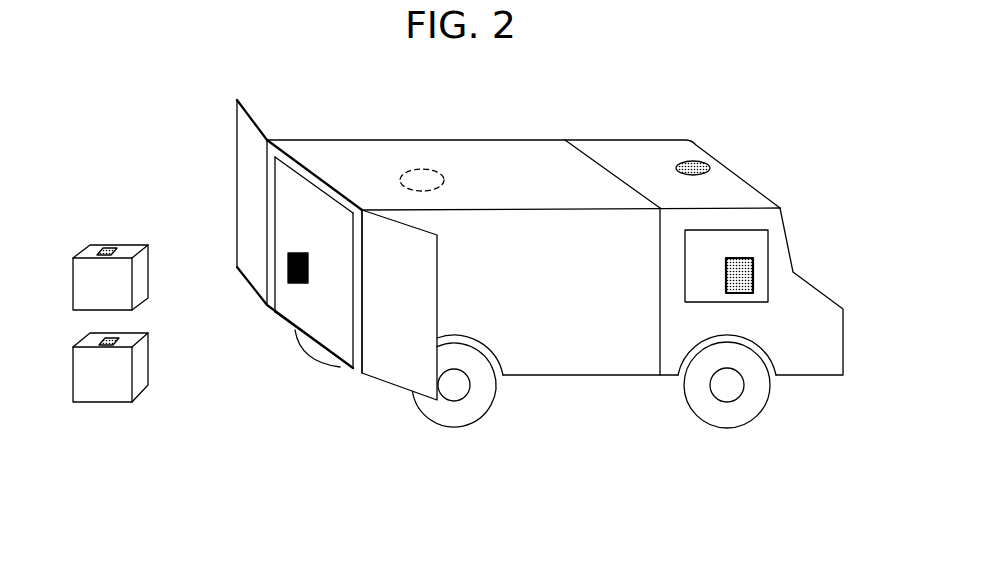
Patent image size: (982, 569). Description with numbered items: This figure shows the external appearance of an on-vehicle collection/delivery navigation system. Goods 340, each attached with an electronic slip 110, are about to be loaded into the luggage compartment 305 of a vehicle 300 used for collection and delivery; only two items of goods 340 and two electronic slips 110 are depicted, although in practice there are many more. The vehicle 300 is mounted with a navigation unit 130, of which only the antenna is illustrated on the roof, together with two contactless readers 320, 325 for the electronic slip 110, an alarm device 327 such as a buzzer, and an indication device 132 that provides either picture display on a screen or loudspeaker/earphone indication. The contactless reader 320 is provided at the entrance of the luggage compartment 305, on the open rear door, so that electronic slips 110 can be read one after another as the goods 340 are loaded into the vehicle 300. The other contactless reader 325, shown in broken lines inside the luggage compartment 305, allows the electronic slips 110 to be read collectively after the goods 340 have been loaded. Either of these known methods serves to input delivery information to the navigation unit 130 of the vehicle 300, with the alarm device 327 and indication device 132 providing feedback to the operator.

The electronic slip 110 is at (107, 340).
The navigation unit 130 is at (698, 163).
The indication device 132 is at (740, 275).
The vehicle 300 is at (640, 148).
The luggage compartment 305 is at (530, 148).
The contactless reader 320 is at (313, 170).
The contactless reader 325 is at (445, 168).
The alarm device 327 is at (293, 284).
The goods 340 is at (142, 290).